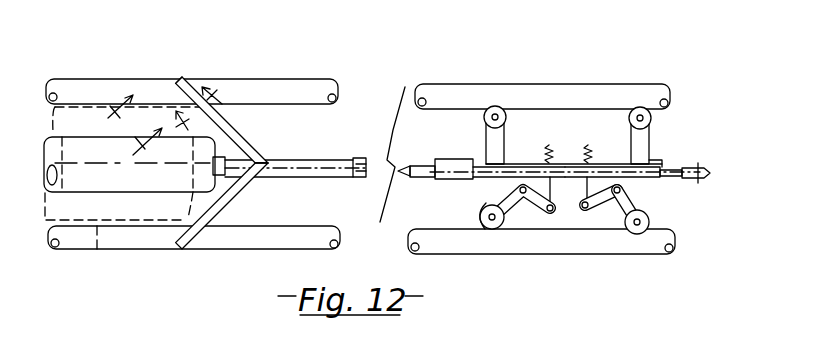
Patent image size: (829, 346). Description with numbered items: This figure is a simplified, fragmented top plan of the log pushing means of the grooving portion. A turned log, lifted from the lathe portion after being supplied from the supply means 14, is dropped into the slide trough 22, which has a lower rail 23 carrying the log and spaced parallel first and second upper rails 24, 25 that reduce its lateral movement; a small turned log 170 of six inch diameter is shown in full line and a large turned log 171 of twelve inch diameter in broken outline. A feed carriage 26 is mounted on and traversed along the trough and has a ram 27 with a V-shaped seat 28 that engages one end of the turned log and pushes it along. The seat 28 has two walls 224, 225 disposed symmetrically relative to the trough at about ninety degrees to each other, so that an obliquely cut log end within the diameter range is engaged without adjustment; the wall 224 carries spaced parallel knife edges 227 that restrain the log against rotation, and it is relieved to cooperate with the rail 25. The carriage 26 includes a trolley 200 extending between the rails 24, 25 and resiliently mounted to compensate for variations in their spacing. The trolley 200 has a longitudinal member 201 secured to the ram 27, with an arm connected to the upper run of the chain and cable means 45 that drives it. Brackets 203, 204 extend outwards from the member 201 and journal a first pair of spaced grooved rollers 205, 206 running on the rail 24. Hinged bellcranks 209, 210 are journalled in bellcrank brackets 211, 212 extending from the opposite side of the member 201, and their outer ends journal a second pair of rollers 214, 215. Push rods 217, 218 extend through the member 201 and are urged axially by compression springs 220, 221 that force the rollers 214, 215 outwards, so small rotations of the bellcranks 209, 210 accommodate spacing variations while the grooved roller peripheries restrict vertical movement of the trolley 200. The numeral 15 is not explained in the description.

The supply means 14 is at (145, 151).
The plate member 15 is at (129, 126).
The slide trough 22 is at (356, 93).
The lower rail 23 is at (358, 157).
The first upper rail 24 is at (322, 80).
The second upper rail 25 is at (270, 244).
The feed carriage 26 is at (513, 130).
The ram 27 is at (313, 177).
The V-shaped seat 28 is at (246, 188).
The chain and cable means 45 is at (406, 173).
The small turned log 170 is at (93, 187).
The large turned log 171 is at (97, 250).
The trolley 200 is at (452, 197).
The longitudinal member 201 is at (479, 158).
The bracket 203 is at (487, 132).
The bracket 204 is at (651, 133).
The roller 205 is at (489, 104).
The roller 206 is at (632, 126).
The bellcrank 209 is at (513, 206).
The bellcrank 210 is at (644, 203).
The bellcrank bracket 211 is at (518, 181).
The bellcrank bracket 212 is at (628, 185).
The roller 214 is at (493, 230).
The roller 215 is at (655, 222).
The push rod 217 is at (563, 150).
The push rod 218 is at (567, 199).
The compression spring 220 is at (530, 154).
The compression spring 221 is at (607, 154).
The wall 224 is at (230, 128).
The wall 225 is at (226, 197).
The knife edges 227 is at (177, 81).